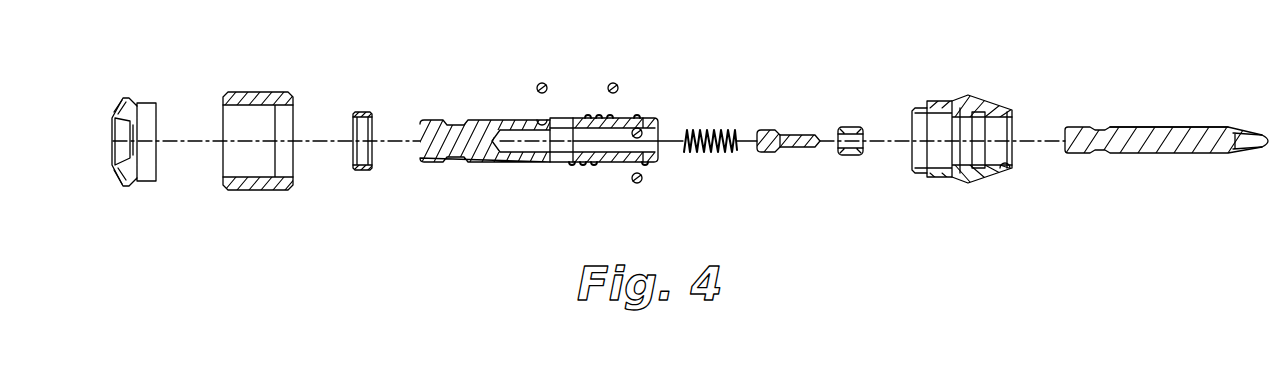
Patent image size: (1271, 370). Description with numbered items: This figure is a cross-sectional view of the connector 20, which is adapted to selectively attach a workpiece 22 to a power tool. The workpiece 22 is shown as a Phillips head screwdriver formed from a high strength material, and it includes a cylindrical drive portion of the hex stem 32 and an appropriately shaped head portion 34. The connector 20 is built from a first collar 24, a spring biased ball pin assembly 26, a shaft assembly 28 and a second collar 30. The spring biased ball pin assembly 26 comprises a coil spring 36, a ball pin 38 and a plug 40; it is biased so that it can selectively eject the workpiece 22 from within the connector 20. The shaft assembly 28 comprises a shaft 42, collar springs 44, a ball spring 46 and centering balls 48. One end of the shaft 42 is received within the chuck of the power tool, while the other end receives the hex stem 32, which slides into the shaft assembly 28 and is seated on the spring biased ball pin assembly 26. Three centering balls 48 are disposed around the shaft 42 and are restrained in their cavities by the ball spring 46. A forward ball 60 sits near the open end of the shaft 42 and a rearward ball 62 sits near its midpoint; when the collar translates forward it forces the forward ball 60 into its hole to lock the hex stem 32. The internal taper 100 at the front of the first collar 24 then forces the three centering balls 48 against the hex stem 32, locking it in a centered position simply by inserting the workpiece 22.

The connector 20 is at (518, 224).
The workpiece 22 is at (1166, 144).
The first collar 24 is at (979, 145).
The spring biased ball pin assembly 26 is at (775, 185).
The shaft assembly 28 is at (527, 113).
The second collar 30 is at (147, 189).
The hex stem 32 is at (1175, 155).
The head portion 34 is at (1260, 132).
The coil spring 36 is at (723, 131).
The ball pin 38 is at (787, 149).
The plug 40 is at (852, 126).
The shaft 42 is at (482, 119).
The collar springs 44 is at (573, 118).
The ball spring 46 is at (643, 119).
The centering balls 48 is at (642, 178).
The forward ball 60 is at (618, 86).
The rearward ball 62 is at (542, 83).
The internal taper 100 is at (1007, 171).